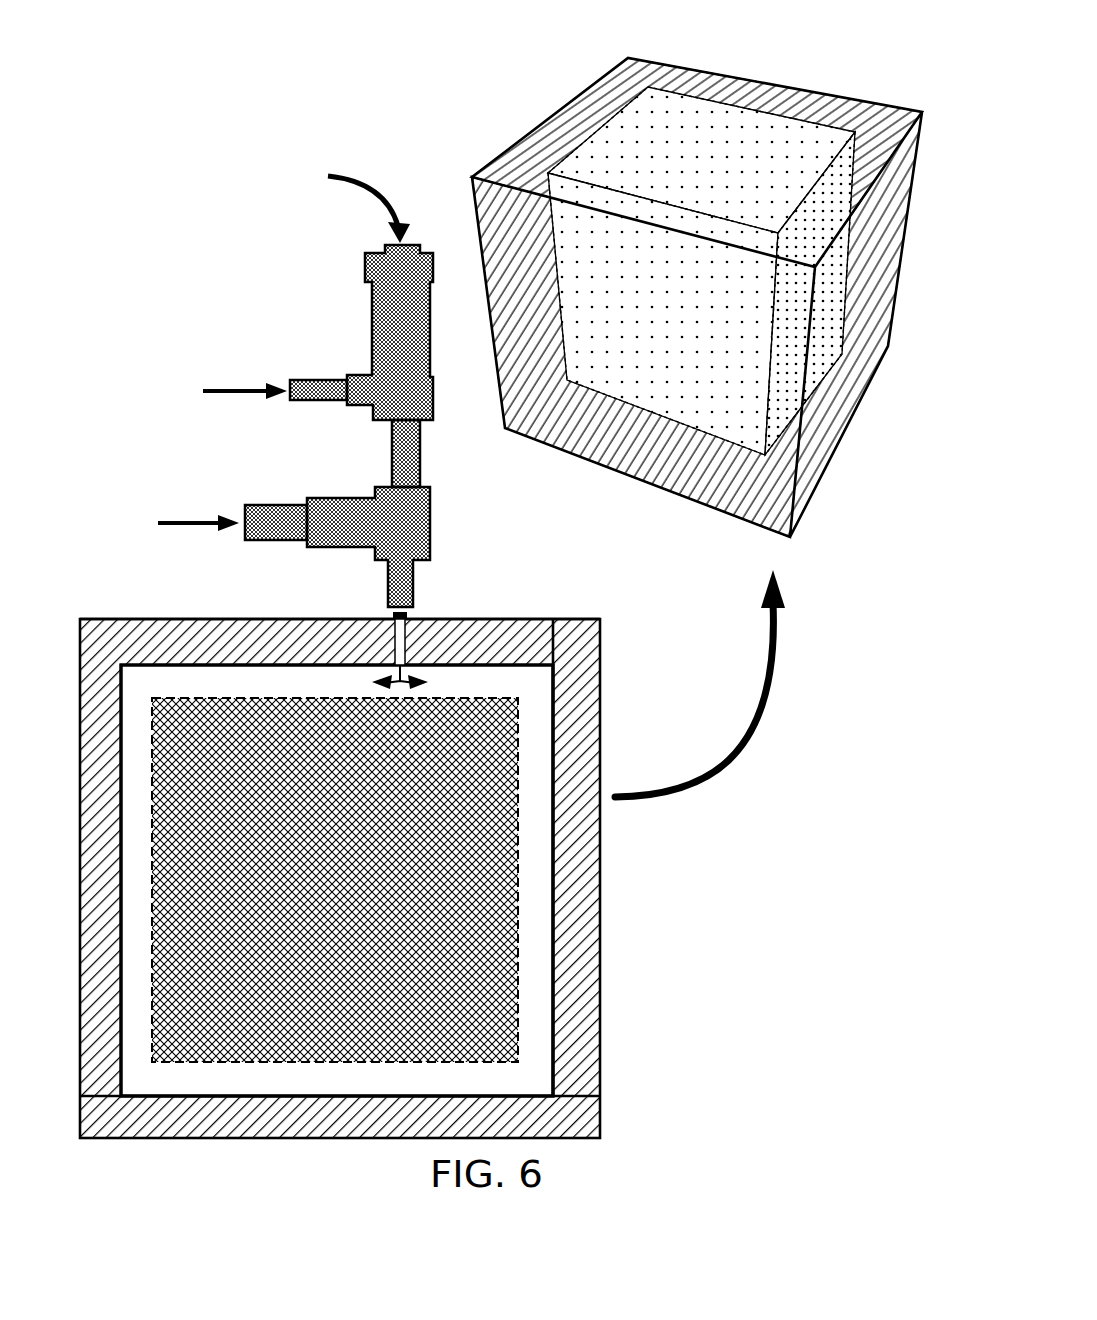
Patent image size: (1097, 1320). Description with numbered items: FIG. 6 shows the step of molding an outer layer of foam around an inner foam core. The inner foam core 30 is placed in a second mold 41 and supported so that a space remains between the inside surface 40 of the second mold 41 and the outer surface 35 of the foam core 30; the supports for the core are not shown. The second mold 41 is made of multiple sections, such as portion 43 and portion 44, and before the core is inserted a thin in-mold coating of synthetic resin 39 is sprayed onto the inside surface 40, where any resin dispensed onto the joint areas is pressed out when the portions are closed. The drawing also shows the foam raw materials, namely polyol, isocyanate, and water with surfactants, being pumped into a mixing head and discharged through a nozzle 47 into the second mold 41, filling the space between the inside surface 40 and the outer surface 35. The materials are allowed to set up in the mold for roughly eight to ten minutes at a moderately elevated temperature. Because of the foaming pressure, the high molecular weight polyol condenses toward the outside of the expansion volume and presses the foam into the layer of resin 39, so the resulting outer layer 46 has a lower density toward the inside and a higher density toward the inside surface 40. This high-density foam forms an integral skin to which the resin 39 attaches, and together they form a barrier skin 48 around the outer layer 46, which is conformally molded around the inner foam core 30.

The inner foam core 30 is at (607, 397).
The outer surface 35 is at (520, 918).
The synthetic resin 39 is at (121, 693).
The inside surface 40 is at (550, 868).
The second mold 41 is at (622, 629).
The portion 43 is at (214, 618).
The portion 44 is at (598, 985).
The outer layer 46 is at (876, 446).
The nozzle 47 is at (415, 597).
The barrier skin 48 is at (857, 155).